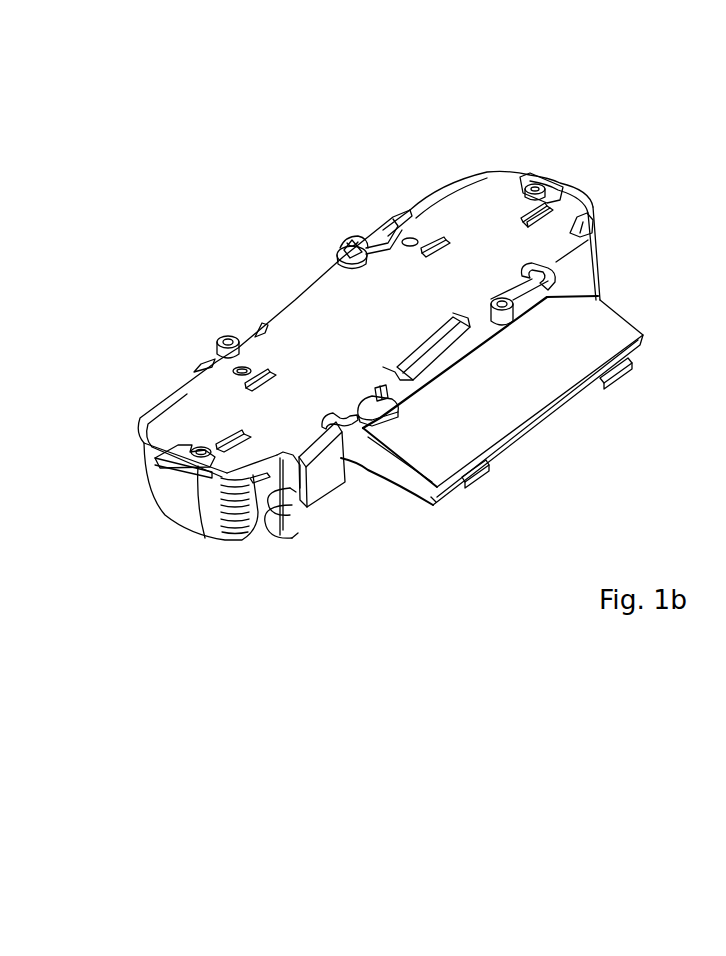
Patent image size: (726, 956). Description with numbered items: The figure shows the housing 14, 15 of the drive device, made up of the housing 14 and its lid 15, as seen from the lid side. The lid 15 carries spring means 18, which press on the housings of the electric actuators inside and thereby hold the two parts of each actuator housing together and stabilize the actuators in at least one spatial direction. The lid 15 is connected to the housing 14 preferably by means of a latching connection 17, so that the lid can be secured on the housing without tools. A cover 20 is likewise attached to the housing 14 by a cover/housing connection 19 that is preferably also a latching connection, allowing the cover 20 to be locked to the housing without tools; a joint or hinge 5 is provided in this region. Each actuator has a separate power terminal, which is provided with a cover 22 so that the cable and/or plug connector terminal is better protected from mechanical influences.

The joint, hinge 5 is at (520, 297).
The housing 14 is at (369, 355).
The lid 15 is at (315, 327).
The lid/housing connection, latching connection 17 is at (389, 204).
The spring means 18 is at (519, 210).
The cover/housing connection 19 is at (492, 458).
The cover 20 is at (523, 400).
The cover for the electric terminal 22 is at (322, 478).